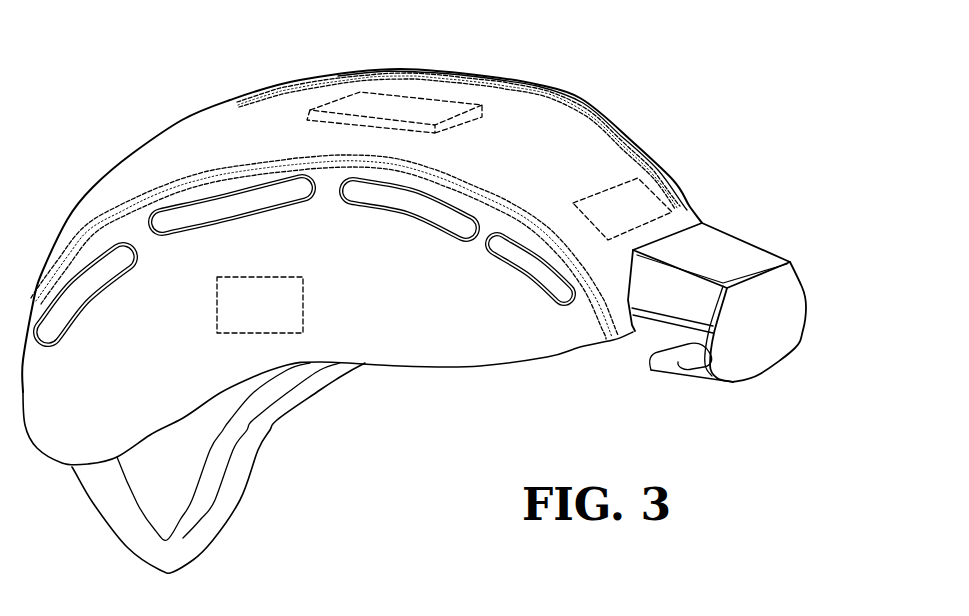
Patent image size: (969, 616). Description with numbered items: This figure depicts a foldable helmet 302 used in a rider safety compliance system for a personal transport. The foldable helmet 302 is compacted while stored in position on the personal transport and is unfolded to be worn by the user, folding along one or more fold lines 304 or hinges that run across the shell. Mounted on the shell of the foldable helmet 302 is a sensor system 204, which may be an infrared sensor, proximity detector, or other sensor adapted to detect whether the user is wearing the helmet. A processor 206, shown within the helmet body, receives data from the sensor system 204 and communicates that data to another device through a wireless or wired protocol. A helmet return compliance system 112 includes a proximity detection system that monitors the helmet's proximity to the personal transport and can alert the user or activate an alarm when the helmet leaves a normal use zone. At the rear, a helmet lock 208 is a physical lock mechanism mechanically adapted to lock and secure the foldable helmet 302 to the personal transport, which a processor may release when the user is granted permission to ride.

The foldable helmet 302 is at (187, 122).
The fold lines 304 is at (553, 93).
The sensor system 204 is at (397, 93).
The helmet return compliance system 112 is at (641, 178).
The processor 206 is at (302, 314).
The helmet lock 208 is at (763, 337).